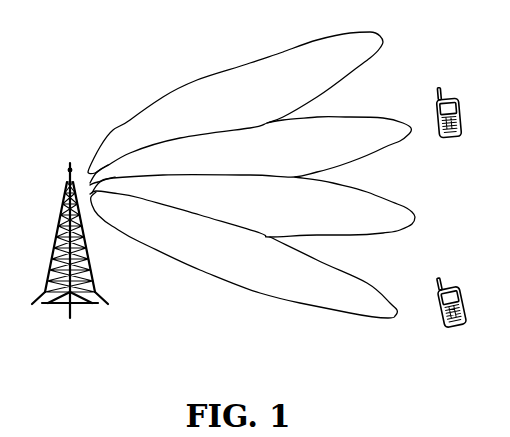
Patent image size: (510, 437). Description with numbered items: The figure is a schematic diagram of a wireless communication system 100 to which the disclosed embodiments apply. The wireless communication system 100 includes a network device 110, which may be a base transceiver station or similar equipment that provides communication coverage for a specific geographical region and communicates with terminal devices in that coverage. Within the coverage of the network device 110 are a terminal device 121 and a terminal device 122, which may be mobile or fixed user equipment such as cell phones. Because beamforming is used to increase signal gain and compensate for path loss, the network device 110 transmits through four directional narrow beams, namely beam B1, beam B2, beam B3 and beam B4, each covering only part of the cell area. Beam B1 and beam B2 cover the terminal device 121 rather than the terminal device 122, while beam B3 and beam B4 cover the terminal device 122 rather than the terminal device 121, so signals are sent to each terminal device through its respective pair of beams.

The wireless communication system 100 is at (72, 54).
The network device 110 is at (55, 218).
The terminal device 121 is at (431, 106).
The terminal device 122 is at (432, 303).
The beam B1 is at (235, 103).
The beam B2 is at (250, 151).
The beam B3 is at (252, 207).
The beam B4 is at (244, 255).